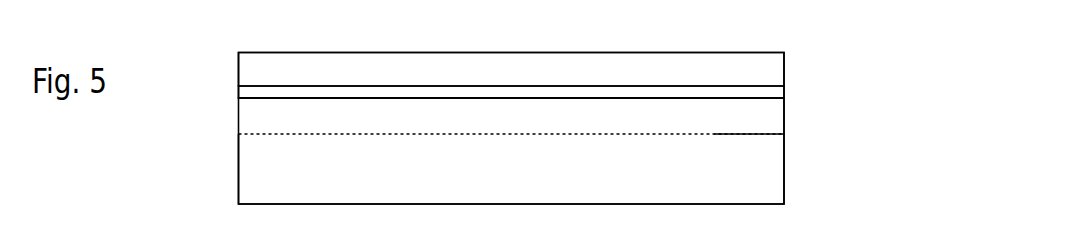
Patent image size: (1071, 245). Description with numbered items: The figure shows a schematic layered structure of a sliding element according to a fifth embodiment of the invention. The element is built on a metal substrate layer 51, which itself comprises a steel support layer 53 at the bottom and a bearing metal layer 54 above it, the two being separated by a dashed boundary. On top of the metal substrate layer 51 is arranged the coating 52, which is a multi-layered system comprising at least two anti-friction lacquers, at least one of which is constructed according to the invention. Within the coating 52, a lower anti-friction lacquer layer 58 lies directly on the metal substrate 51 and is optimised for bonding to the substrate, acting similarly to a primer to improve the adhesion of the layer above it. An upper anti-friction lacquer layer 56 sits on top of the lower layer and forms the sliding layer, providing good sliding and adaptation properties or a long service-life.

The metal substrate layer 51 is at (228, 100).
The coating 52 is at (228, 53).
The steel support layer 53 is at (770, 192).
The bearing metal layer 54 is at (770, 120).
The upper anti-friction lacquer layer 56 is at (772, 58).
The lower anti-friction lacquer layer 58 is at (770, 92).